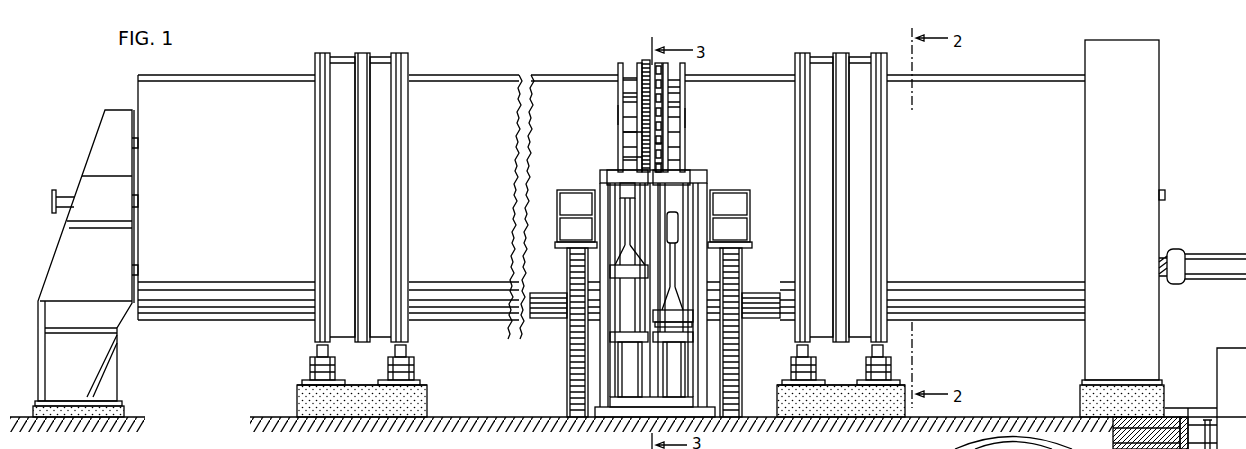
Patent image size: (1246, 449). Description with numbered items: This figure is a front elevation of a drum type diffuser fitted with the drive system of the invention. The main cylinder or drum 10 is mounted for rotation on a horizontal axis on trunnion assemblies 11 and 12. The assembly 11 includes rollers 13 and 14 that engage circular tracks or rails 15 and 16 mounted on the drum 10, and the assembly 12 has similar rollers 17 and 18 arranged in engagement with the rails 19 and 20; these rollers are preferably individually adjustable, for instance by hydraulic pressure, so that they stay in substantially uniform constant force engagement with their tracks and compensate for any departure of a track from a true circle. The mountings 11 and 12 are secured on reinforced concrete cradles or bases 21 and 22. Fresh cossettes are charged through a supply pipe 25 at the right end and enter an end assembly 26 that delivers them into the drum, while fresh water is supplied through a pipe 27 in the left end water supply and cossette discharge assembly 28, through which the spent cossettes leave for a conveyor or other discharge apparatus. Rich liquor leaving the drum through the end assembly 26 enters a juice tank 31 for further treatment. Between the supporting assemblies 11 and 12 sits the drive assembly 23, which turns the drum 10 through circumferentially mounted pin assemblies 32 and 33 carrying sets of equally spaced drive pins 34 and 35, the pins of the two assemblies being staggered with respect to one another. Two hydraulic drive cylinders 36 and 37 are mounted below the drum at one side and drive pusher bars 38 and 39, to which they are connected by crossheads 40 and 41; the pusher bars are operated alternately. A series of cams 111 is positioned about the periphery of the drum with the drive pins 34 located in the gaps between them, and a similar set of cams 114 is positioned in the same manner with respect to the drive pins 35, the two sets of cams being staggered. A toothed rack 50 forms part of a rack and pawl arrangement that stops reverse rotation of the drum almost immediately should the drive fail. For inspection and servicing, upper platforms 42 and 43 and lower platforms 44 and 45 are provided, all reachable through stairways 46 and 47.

The drum 10 is at (463, 195).
The trunnion assembly 11 is at (371, 380).
The trunnion assembly 12 is at (849, 378).
The roller 13 is at (312, 352).
The roller 14 is at (414, 352).
The circular track 15 is at (330, 50).
The circular track 16 is at (400, 50).
The roller 17 is at (797, 352).
The roller 18 is at (880, 350).
The rail 19 is at (806, 50).
The rail 20 is at (880, 50).
The concrete foundation 21 is at (425, 397).
The reinforced concrete base 22 is at (788, 400).
The drive assembly 23 is at (737, 182).
The supply pipe 25 is at (1212, 258).
The end assembly 26 is at (1129, 185).
The pipe 27 is at (68, 195).
The water supply and cossette discharge assembly 28 is at (104, 273).
The juice tank 31 is at (1217, 358).
The pin assembly 32 is at (683, 118).
The pin assembly 33 is at (620, 115).
The drive pins 34 is at (672, 107).
The drive pins 35 is at (632, 97).
The hydraulic drive cylinder 36 is at (677, 380).
The hydraulic drive cylinder 37 is at (638, 387).
The pusher bar 38 is at (677, 255).
The pusher bar 39 is at (628, 195).
The crosshead 40 is at (675, 313).
The crosshead 41 is at (620, 268).
The upper platform 42 is at (750, 200).
The upper platform 43 is at (557, 200).
The lower platform 44 is at (753, 307).
The lower platform 45 is at (548, 303).
The stairway 46 is at (742, 343).
The stairway 47 is at (567, 370).
The toothed rack 50 is at (645, 72).
The cams 111 is at (660, 163).
The cams 114 is at (643, 157).